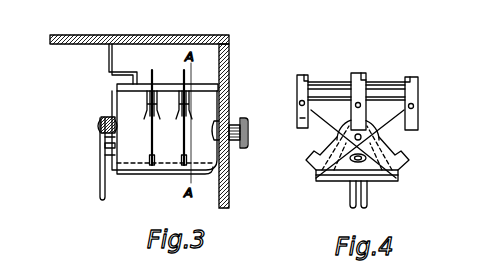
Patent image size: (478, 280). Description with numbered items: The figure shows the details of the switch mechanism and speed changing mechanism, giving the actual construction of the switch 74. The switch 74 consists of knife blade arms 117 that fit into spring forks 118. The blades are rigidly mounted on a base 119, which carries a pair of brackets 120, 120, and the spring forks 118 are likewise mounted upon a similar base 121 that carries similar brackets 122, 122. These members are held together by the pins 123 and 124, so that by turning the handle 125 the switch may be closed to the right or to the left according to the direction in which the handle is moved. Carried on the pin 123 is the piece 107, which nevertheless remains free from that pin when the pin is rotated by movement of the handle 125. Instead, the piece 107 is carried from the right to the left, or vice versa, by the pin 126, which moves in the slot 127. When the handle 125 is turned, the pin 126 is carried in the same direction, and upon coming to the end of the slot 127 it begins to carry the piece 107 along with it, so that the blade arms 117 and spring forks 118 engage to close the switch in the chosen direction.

In FIG. 4, the switch 74 is at (366, 84).
In FIG. 3, the piece 107 is at (99, 142).
In FIG. 4, the knife blade arms 117 is at (306, 155).
In FIG. 4, the spring forks 118 is at (297, 118).
In FIG. 3, the base 119 is at (170, 176).
In FIG. 3, the brackets 120 is at (99, 177).
In FIG. 3, the base 121 is at (162, 86).
In FIG. 3, the brackets 122 is at (110, 89).
In FIG. 3, the pin 123 is at (106, 121).
In FIG. 3, the pin 124 is at (232, 123).
In FIG. 3, the handle 125 is at (249, 131).
In FIG. 3, the pin 126 is at (105, 156).
In FIG. 4, the slot 127 is at (394, 180).